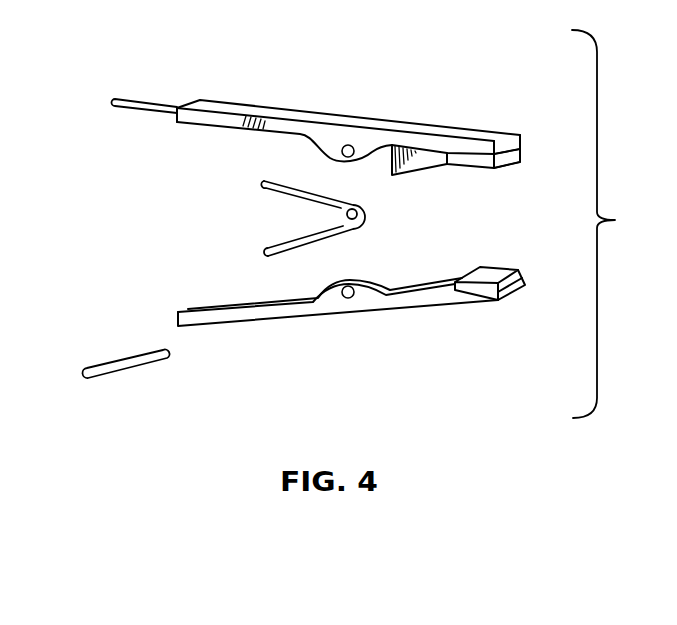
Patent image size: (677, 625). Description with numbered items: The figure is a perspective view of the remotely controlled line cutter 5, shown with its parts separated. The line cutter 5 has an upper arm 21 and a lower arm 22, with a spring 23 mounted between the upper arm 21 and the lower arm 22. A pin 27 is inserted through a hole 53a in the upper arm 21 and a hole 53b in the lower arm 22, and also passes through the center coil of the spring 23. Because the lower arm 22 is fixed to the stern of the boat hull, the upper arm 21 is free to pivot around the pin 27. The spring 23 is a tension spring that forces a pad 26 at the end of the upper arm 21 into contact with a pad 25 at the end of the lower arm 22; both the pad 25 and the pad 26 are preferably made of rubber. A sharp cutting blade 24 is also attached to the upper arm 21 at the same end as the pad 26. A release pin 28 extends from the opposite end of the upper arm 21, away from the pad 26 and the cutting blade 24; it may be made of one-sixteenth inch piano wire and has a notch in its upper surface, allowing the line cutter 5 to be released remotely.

The line cutter 5 is at (365, 110).
The upper arm 21 is at (379, 126).
The lower arm 22 is at (368, 312).
The spring 23 is at (290, 240).
The cutting blade 24 is at (432, 163).
The pad 25 is at (503, 267).
The pad 26 is at (513, 158).
The pin 27 is at (141, 365).
The release pin 28 is at (154, 102).
The hole 53a is at (347, 160).
The hole 53b is at (353, 285).